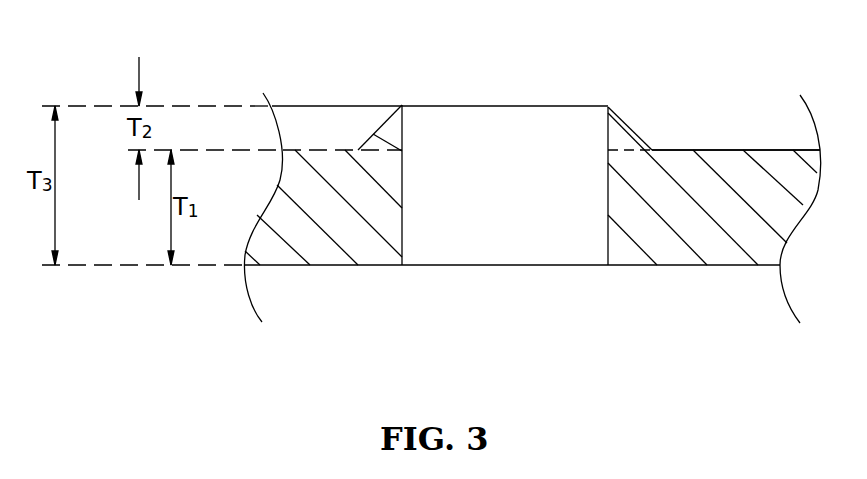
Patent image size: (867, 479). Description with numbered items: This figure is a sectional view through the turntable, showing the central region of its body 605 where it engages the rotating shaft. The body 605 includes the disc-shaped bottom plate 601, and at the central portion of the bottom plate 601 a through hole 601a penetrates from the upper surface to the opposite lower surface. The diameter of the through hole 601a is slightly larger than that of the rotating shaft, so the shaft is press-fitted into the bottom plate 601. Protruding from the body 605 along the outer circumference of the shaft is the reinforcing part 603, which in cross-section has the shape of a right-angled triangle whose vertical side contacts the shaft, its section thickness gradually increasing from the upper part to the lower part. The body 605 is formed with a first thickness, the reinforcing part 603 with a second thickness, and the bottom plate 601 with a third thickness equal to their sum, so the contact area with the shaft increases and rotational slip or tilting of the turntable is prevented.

The bottom plate 601 is at (723, 235).
The through hole 601a is at (402, 228).
The reinforcing part 603 is at (618, 138).
The body 605 is at (733, 138).